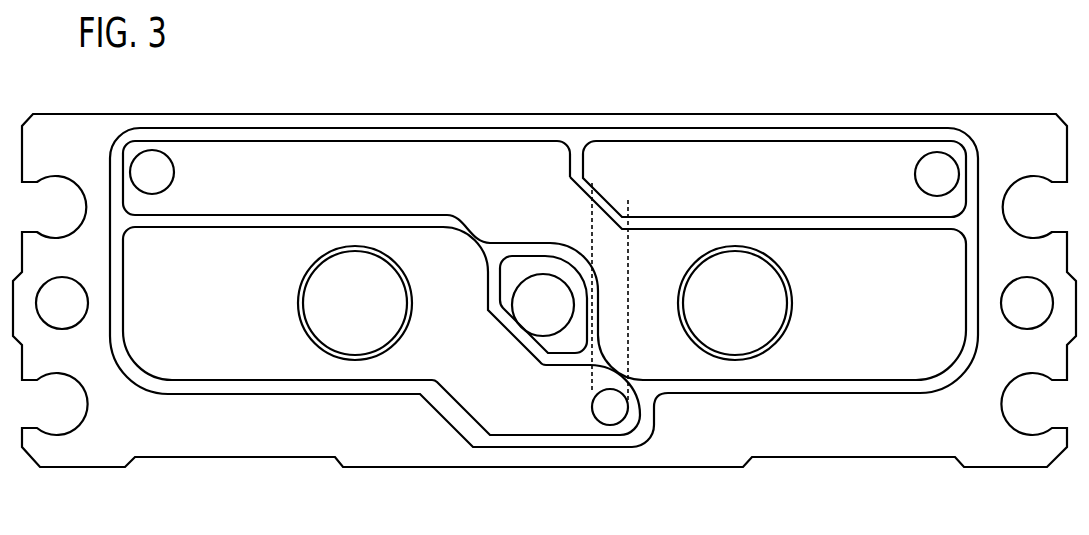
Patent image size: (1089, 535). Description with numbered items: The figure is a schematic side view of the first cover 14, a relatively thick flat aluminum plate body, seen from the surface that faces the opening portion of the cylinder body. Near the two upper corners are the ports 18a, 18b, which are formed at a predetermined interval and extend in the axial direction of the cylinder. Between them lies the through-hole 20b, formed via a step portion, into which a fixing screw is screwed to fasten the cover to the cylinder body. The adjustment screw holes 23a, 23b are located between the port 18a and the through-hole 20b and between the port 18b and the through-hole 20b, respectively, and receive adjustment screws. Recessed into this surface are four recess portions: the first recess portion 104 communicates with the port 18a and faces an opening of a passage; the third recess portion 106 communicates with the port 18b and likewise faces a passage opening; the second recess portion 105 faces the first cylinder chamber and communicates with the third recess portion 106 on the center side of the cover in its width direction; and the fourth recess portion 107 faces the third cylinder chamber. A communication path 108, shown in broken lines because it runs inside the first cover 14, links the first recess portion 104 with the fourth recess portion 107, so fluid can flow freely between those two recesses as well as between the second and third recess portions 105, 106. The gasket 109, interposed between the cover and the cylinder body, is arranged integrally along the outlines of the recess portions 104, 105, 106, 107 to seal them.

The first cover 14 is at (931, 51).
The port 18a is at (945, 172).
The port 18b is at (147, 170).
The through-hole 20b is at (558, 283).
The adjustment screw hole 23a is at (717, 263).
The adjustment screw hole 23b is at (380, 267).
The first recess portion 104 is at (827, 155).
The second recess portion 105 is at (851, 370).
The third recess portion 106 is at (250, 153).
The fourth recess portion 107 is at (282, 358).
The communication path 108 is at (627, 200).
The gasket 109 is at (197, 390).